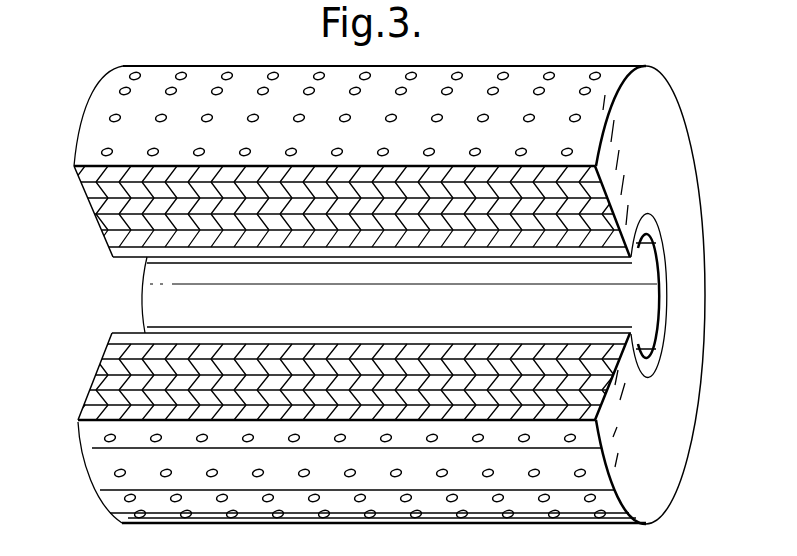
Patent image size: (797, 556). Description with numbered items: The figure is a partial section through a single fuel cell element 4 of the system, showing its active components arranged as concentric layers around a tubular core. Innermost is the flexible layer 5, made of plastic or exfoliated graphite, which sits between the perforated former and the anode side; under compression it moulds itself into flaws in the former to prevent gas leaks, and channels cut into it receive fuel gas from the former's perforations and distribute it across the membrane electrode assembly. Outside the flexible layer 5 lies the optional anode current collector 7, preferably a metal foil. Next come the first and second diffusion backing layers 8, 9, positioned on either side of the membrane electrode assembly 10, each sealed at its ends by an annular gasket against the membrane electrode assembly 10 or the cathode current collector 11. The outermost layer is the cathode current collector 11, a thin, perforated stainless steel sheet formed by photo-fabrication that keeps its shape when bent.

The fuel cell element 4 is at (199, 47).
The cathode current collector 11 is at (80, 174).
The second diffusion backing layer 9 is at (84, 193).
The membrane electrode assembly 10 is at (97, 208).
The first diffusion backing layer 8 is at (110, 222).
The anode current collector 7 is at (117, 237).
The flexible layer 5 is at (122, 252).